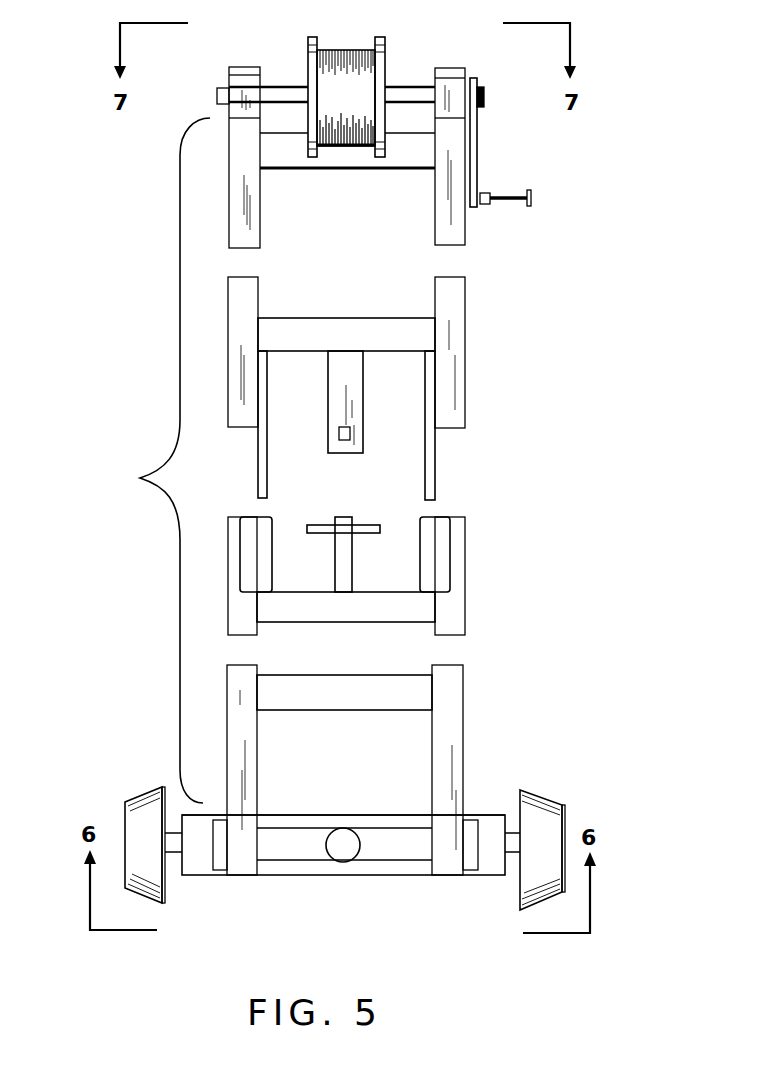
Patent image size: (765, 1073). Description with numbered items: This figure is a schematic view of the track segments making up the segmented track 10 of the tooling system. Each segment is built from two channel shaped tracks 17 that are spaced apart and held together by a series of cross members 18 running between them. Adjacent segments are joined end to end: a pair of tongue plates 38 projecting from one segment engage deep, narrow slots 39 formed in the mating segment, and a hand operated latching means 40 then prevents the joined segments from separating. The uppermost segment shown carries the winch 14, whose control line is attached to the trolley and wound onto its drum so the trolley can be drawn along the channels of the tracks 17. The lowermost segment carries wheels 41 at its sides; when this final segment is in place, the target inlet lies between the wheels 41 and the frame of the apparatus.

The segmented track 10 is at (160, 460).
The winch 14 is at (212, 92).
The channel shaped tracks 17 is at (229, 193).
The cross members 18 is at (357, 170).
The tongue plates 38 is at (258, 467).
The slots 39 is at (250, 514).
The latching means 40 is at (350, 453).
The wheels 41 is at (120, 822).